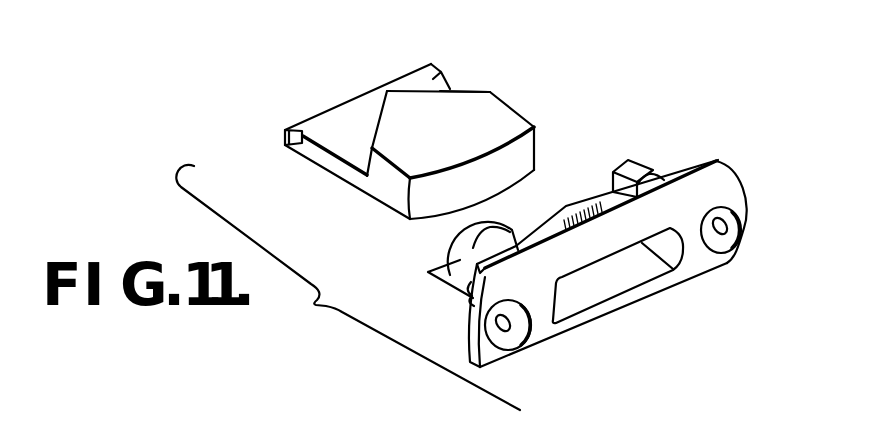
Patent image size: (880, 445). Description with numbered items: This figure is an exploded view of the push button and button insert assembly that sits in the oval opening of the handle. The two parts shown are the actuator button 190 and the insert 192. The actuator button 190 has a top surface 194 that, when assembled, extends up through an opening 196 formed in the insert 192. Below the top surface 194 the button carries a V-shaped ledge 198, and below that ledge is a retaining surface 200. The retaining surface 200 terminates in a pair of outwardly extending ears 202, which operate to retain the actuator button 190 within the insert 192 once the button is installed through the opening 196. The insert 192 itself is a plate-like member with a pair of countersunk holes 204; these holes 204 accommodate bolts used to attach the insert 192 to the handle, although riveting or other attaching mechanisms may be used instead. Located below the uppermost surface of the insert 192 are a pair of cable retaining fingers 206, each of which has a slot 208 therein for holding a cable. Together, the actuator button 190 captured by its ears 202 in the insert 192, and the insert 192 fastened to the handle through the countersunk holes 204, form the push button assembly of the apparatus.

The actuator button 190 is at (512, 110).
The insert 192 is at (712, 158).
The top surface 194 is at (412, 218).
The opening 196 is at (578, 306).
The V-shaped ledge 198 is at (475, 89).
The retaining surface 200 is at (331, 141).
The outwardly extending ears 202 is at (433, 64).
The countersunk holes 204 is at (502, 338).
The cable retaining fingers 206 is at (492, 219).
The slot 208 is at (661, 179).